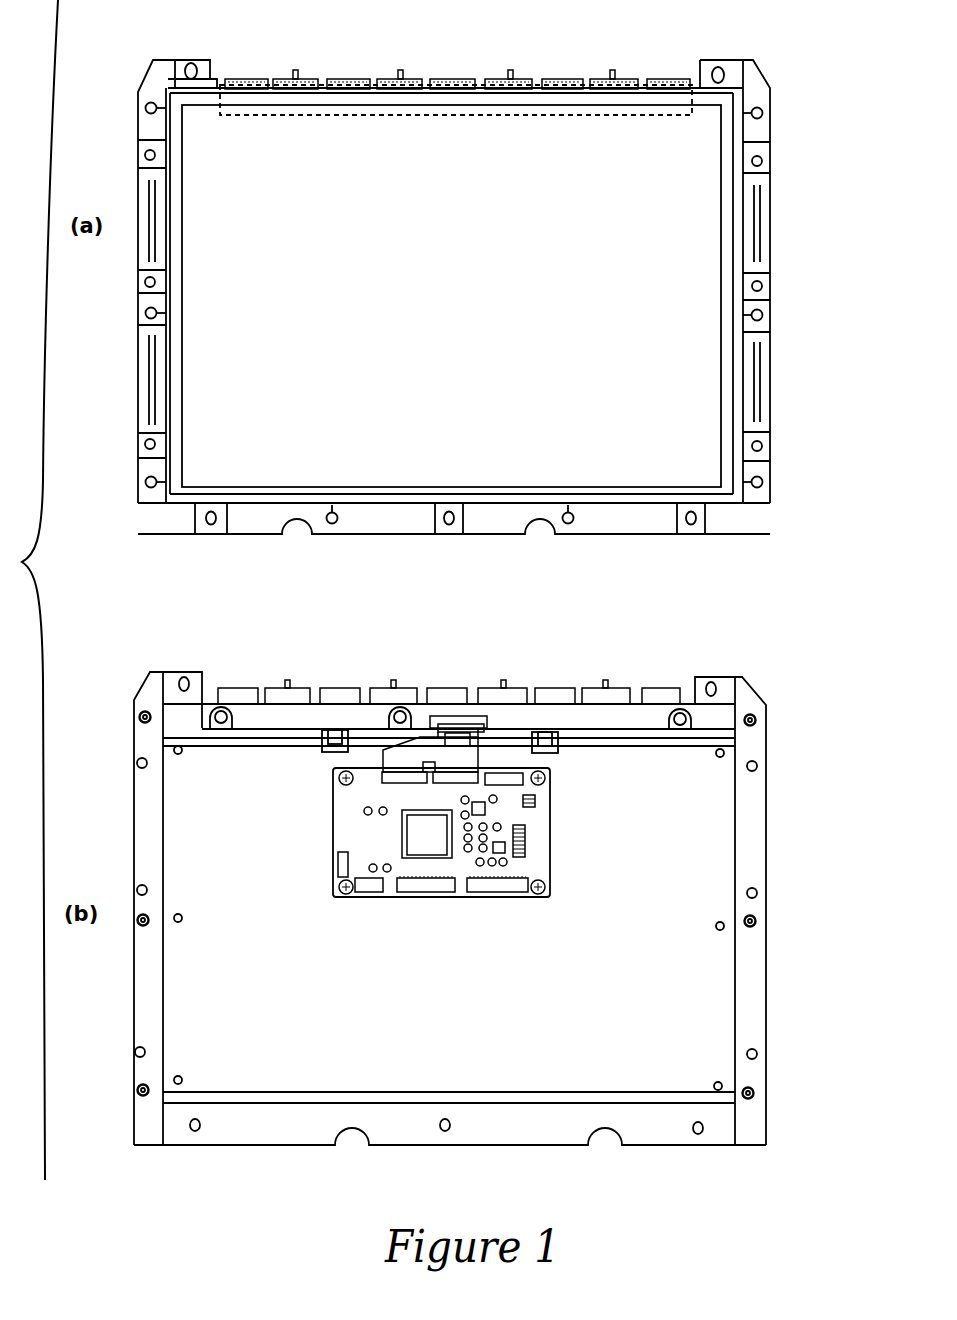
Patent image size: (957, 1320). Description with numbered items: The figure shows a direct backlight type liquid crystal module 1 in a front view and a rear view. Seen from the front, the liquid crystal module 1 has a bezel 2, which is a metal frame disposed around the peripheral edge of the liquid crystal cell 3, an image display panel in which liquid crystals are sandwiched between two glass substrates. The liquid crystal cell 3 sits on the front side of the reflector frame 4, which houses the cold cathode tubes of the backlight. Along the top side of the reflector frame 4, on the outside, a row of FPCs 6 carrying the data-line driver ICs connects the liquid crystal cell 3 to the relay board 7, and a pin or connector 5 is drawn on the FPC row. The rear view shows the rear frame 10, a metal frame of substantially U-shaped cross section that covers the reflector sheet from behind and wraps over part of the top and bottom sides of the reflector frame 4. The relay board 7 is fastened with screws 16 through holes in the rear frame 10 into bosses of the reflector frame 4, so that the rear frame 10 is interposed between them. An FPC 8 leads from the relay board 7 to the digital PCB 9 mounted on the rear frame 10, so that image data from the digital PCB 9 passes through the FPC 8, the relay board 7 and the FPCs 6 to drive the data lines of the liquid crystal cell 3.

The liquid crystal module 1 is at (356, 56).
The bezel 2 is at (727, 207).
The liquid crystal cell 3 is at (648, 332).
The reflector frame 4 is at (736, 517).
The connector 5 is at (608, 78).
The FPC 6 is at (560, 88).
The relay board 7 is at (445, 117).
The FPC 8 is at (407, 759).
The digital PCB 9 is at (378, 832).
The rear frame 10 is at (512, 1032).
The screw 16 is at (221, 716).